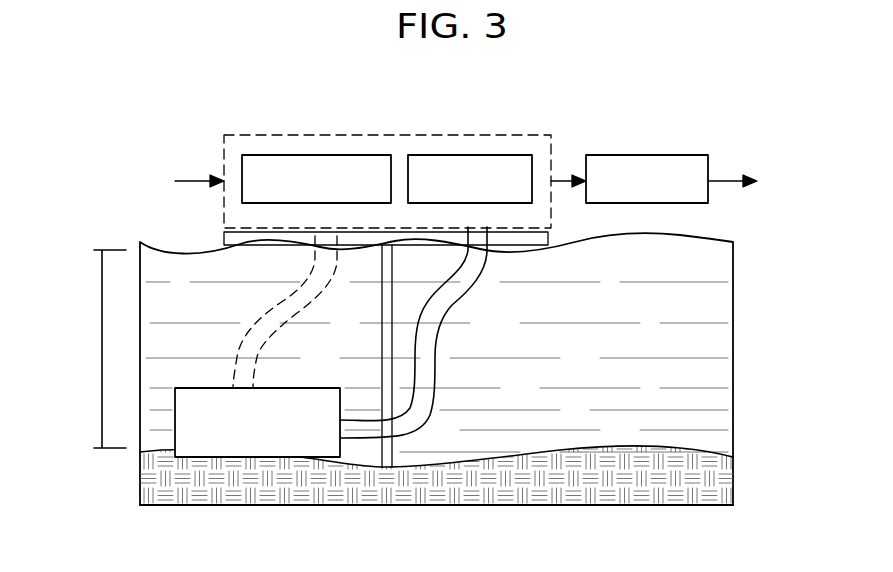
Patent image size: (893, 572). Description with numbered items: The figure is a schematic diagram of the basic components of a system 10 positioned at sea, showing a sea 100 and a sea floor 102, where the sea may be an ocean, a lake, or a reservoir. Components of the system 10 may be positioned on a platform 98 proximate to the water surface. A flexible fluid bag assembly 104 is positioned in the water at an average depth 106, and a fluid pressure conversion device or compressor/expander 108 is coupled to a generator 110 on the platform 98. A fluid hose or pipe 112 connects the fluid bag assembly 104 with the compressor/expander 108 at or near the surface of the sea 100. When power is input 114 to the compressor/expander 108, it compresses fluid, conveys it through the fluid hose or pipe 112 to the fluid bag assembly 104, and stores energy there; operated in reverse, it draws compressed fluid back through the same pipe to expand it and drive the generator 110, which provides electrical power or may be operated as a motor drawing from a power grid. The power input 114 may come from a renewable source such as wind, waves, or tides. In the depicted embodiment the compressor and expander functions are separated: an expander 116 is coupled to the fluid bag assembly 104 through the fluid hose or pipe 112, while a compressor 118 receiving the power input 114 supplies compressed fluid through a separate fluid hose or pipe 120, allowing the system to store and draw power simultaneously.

The system 10 is at (645, 92).
The platform 98 is at (548, 238).
The sea 100 is at (733, 380).
The sea floor 102 is at (735, 485).
The fluid bag assembly 104 is at (190, 448).
The average depth 106 is at (101, 338).
The compressor/expander 108 is at (338, 134).
The generator 110 is at (627, 155).
The fluid hose or pipe 112 is at (427, 398).
The power input 114 is at (128, 152).
The expander 116 is at (500, 155).
The compressor 118 is at (293, 155).
The separate fluid hose or pipe 120 is at (288, 298).